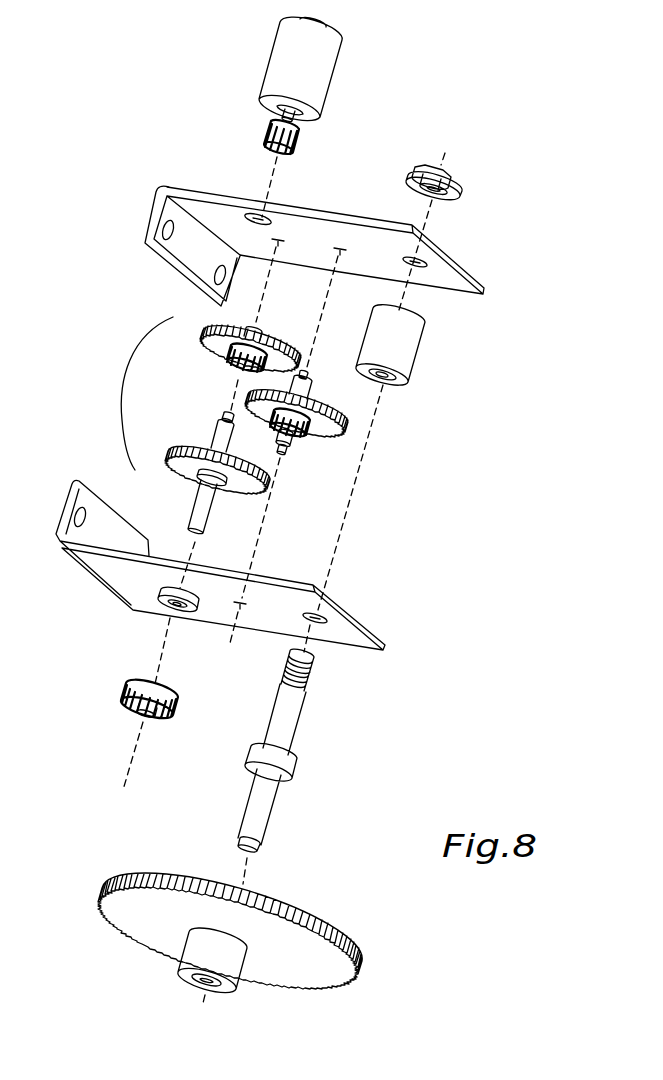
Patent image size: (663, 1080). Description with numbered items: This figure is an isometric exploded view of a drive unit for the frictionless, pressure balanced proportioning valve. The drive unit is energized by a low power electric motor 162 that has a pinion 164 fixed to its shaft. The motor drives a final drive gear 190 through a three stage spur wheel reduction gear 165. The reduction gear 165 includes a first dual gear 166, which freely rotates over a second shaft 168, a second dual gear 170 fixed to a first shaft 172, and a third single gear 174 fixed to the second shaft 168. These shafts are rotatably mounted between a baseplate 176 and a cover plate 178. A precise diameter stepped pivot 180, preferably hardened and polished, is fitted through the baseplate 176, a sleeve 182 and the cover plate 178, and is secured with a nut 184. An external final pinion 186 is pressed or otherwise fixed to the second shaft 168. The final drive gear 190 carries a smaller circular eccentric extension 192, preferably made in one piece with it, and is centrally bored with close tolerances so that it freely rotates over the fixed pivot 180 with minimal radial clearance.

The electric motor 162 is at (330, 83).
The pinion 164 is at (267, 133).
The reduction gear 165 is at (123, 385).
The first dual gear 166 is at (214, 355).
The second shaft 168 is at (209, 516).
The second dual gear 170 is at (342, 430).
The first shaft 172 is at (308, 394).
The third single gear 174 is at (177, 470).
The baseplate 176 is at (143, 603).
The cover plate 178 is at (447, 258).
The stepped pivot 180 is at (303, 764).
The sleeve 182 is at (413, 368).
The nut 184 is at (458, 173).
The final pinion 186 is at (138, 712).
The final drive gear 190 is at (108, 915).
The eccentric extension 192 is at (197, 980).